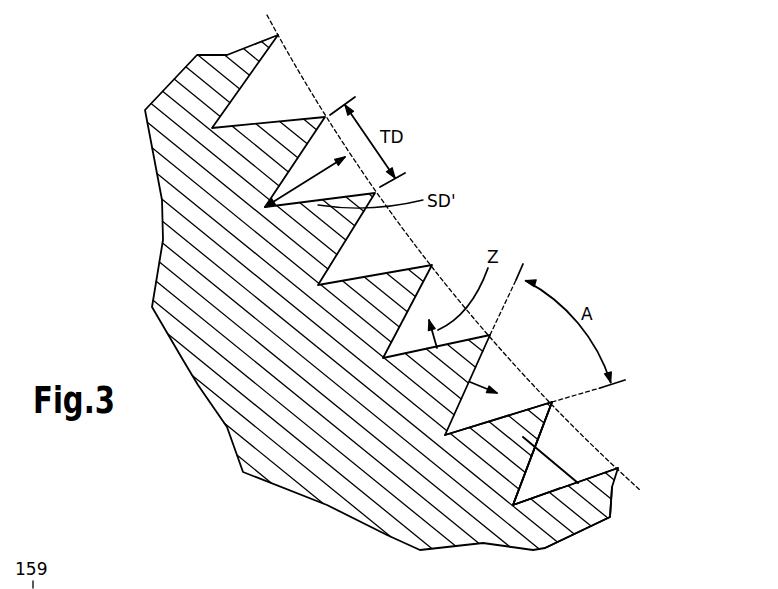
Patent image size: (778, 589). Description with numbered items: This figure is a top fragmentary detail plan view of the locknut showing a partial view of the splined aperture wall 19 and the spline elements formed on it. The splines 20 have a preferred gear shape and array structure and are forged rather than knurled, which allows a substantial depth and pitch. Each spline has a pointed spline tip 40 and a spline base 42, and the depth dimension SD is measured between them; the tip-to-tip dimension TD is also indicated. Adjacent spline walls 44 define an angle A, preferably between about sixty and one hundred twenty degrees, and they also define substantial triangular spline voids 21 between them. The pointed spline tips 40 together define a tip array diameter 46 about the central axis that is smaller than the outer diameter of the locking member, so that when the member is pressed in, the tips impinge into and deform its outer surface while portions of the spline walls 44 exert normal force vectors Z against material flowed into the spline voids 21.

The splined aperture wall 19 is at (603, 545).
The splines 20 is at (612, 500).
The spline voids 21 is at (570, 452).
The spline tip 40 is at (618, 468).
The spline base 42 is at (489, 494).
The spline walls 44 is at (518, 408).
The tip array diameter 46 is at (302, 72).